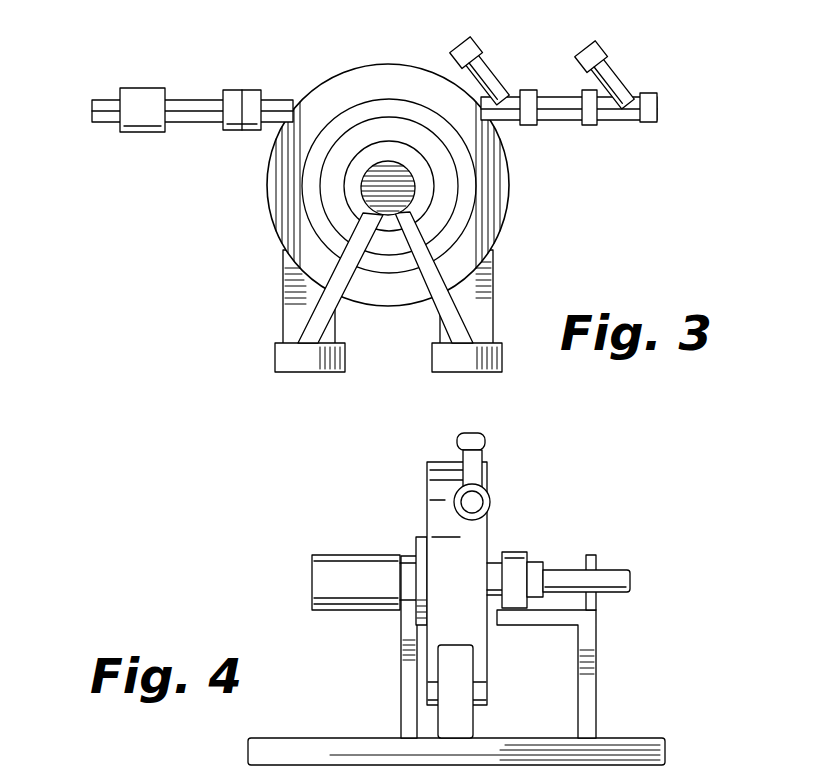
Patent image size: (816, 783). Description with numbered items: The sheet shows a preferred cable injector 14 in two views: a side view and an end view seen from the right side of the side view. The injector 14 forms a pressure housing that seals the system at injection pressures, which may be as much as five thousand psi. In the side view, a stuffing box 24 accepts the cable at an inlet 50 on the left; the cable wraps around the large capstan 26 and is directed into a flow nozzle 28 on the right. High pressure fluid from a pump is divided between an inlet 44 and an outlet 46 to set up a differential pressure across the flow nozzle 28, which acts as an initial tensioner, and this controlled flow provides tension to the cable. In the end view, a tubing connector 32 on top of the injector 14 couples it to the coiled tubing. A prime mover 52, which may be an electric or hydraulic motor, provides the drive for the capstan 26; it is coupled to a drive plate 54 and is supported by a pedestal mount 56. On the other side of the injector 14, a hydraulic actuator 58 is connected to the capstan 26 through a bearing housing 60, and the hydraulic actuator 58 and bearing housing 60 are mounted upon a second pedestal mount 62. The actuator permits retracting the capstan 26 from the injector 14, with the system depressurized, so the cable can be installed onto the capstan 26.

In FIG. 3, the injector 14 is at (508, 217).
In FIG. 4, the injector 14 is at (450, 460).
In FIG. 3, the stuffing box 24 is at (150, 88).
In FIG. 3, the capstan 26 is at (465, 232).
In FIG. 3, the flow nozzle 28 is at (552, 100).
In FIG. 4, the tubing connector 32 is at (492, 500).
In FIG. 3, the inlet 44 is at (508, 120).
In FIG. 3, the outlet 46 is at (630, 120).
In FIG. 3, the inlet 50 is at (105, 122).
In FIG. 4, the prime mover 52 is at (312, 580).
In FIG. 4, the drive plate 54 is at (418, 538).
In FIG. 4, the pedestal mount 56 is at (403, 660).
In FIG. 4, the hydraulic actuator 58 is at (605, 568).
In FIG. 4, the bearing housing 60 is at (527, 550).
In FIG. 4, the pedestal mount 62 is at (593, 663).